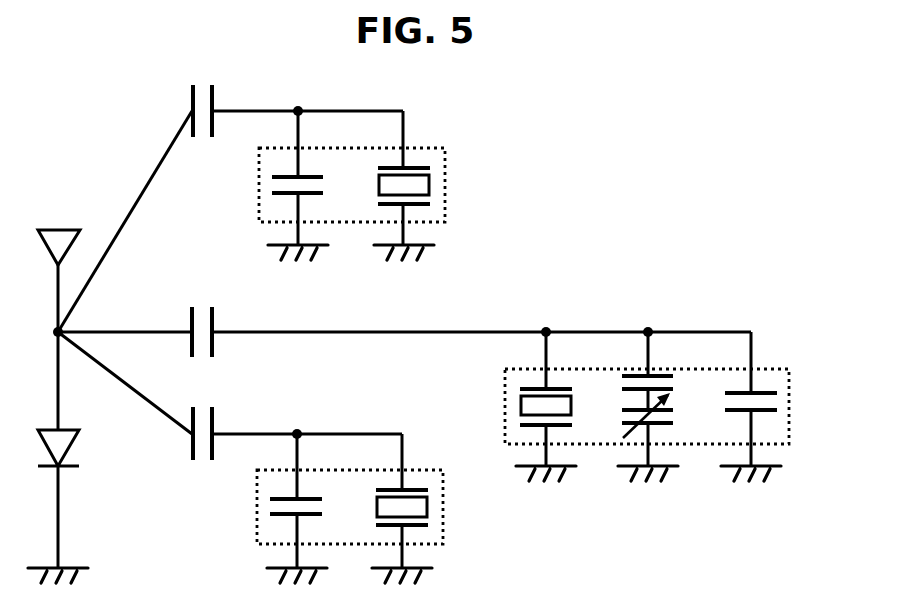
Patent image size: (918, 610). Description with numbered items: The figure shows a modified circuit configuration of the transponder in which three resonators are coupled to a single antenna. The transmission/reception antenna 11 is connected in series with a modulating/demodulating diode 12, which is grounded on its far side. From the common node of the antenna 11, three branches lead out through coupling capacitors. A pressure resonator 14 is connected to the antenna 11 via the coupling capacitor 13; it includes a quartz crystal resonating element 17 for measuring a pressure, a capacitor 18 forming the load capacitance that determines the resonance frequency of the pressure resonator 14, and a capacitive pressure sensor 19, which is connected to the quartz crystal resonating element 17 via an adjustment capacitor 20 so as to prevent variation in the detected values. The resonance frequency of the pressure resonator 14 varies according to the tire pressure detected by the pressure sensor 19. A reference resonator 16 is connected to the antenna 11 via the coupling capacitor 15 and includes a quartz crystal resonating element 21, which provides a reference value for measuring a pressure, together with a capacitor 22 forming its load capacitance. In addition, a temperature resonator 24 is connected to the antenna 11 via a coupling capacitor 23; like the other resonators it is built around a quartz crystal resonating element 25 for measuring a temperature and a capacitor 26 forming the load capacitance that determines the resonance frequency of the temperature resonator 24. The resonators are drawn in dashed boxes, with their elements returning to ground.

The transmission/reception antenna 11 is at (80, 233).
The modulating/demodulating diode 12 is at (80, 452).
The coupling capacitor 13 is at (212, 312).
The pressure resonator 14 is at (789, 415).
The coupling capacitor 15 is at (212, 412).
The reference resonator 16 is at (257, 520).
The quartz crystal resonating element 17 is at (548, 389).
The capacitor 18 is at (760, 393).
The capacitive pressure sensor 19 is at (672, 403).
The adjustment capacitor 20 is at (650, 376).
The quartz crystal resonating element 21 is at (404, 490).
The capacitor 22 is at (300, 499).
The coupling capacitor 23 is at (193, 90).
The temperature resonator 24 is at (259, 195).
The quartz crystal resonating element 25 is at (405, 170).
The capacitor 26 is at (300, 178).